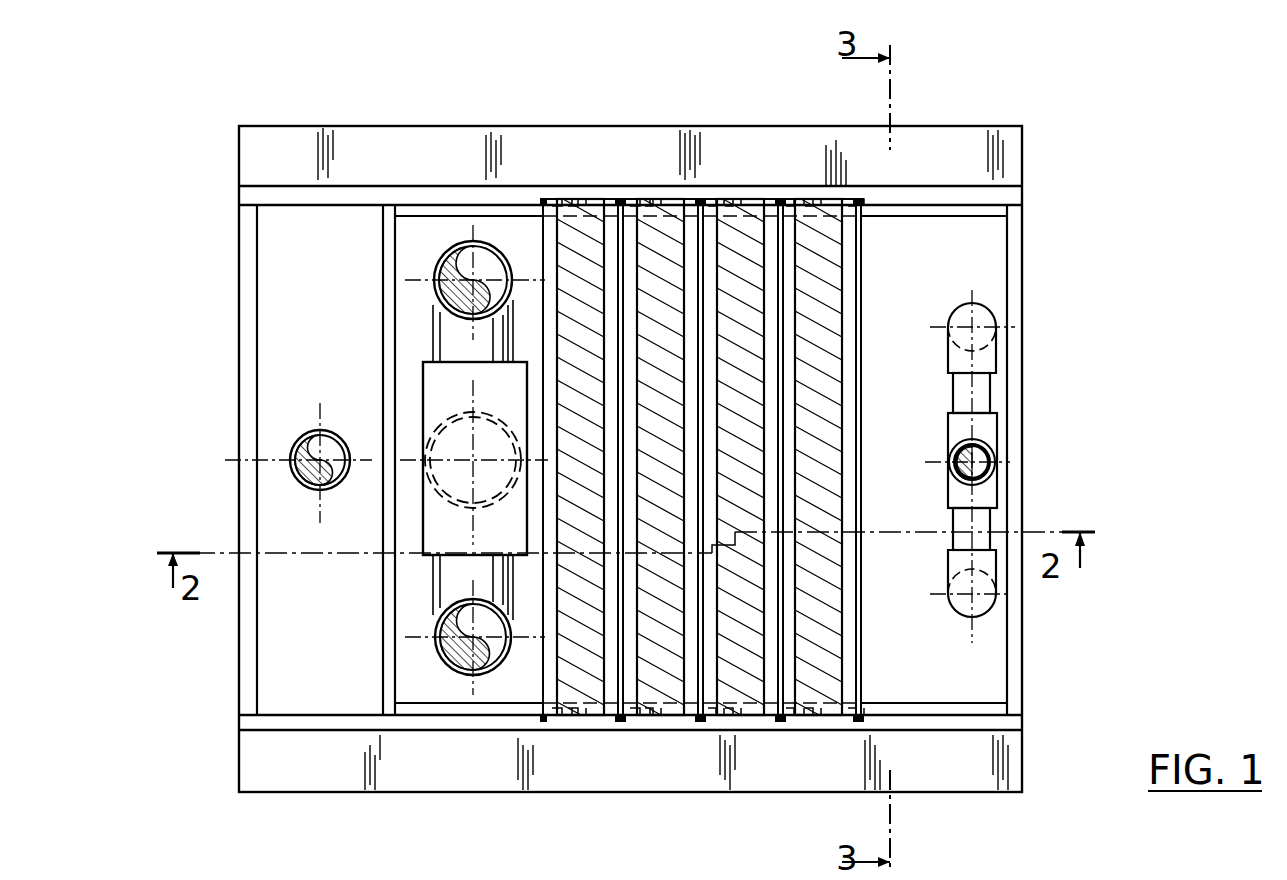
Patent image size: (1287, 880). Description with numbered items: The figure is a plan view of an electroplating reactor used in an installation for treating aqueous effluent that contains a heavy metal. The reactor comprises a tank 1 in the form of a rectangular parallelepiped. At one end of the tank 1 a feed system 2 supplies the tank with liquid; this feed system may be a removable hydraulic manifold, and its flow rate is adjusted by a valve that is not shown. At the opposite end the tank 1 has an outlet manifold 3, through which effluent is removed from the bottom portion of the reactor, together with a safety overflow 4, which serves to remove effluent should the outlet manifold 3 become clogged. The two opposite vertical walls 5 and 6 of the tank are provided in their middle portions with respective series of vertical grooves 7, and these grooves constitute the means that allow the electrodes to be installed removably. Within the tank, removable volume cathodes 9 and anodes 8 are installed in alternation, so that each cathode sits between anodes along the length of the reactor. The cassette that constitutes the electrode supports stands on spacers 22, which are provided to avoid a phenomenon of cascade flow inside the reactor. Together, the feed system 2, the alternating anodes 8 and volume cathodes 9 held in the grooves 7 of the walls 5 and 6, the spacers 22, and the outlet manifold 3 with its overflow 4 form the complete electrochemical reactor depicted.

The tank 1 is at (1022, 305).
The feed system 2 is at (985, 456).
The outlet manifold 3 is at (491, 628).
The safety overflow 4 is at (293, 453).
The vertical wall 5 is at (930, 195).
The vertical wall 6 is at (930, 722).
The vertical grooves 7 is at (680, 724).
The anodes 8 is at (623, 200).
The volume cathodes 9 is at (582, 688).
The spacers 22 is at (996, 224).